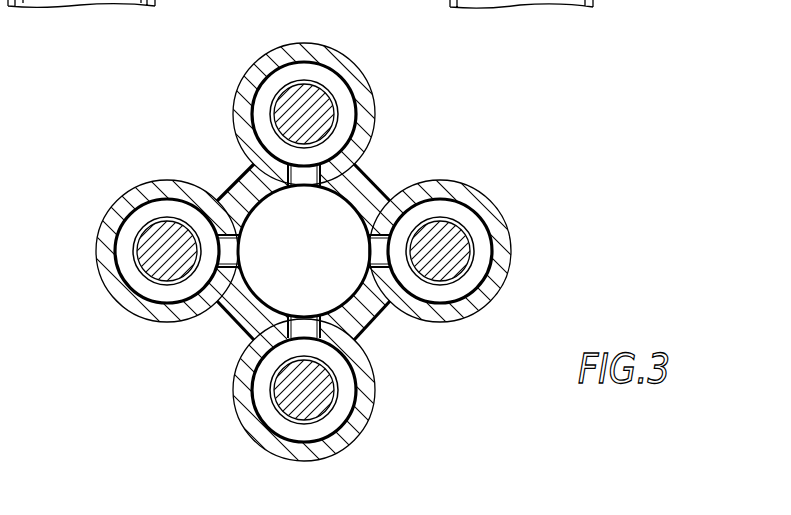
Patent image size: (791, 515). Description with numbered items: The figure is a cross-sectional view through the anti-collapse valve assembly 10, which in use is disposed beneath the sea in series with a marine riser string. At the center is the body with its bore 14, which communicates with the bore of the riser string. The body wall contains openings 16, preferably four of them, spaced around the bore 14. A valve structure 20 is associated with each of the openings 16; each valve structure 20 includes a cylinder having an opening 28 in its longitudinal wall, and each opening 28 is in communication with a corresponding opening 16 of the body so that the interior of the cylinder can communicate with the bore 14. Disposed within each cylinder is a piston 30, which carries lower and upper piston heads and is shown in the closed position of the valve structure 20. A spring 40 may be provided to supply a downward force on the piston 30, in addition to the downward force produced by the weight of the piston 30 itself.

The anti-collapse valve assembly 10 is at (474, 124).
The bore 14 is at (320, 263).
The openings 16 is at (374, 232).
The valve structure 20 is at (313, 42).
The opening 28 is at (311, 159).
The piston 30 is at (317, 89).
The spring 40 is at (333, 96).